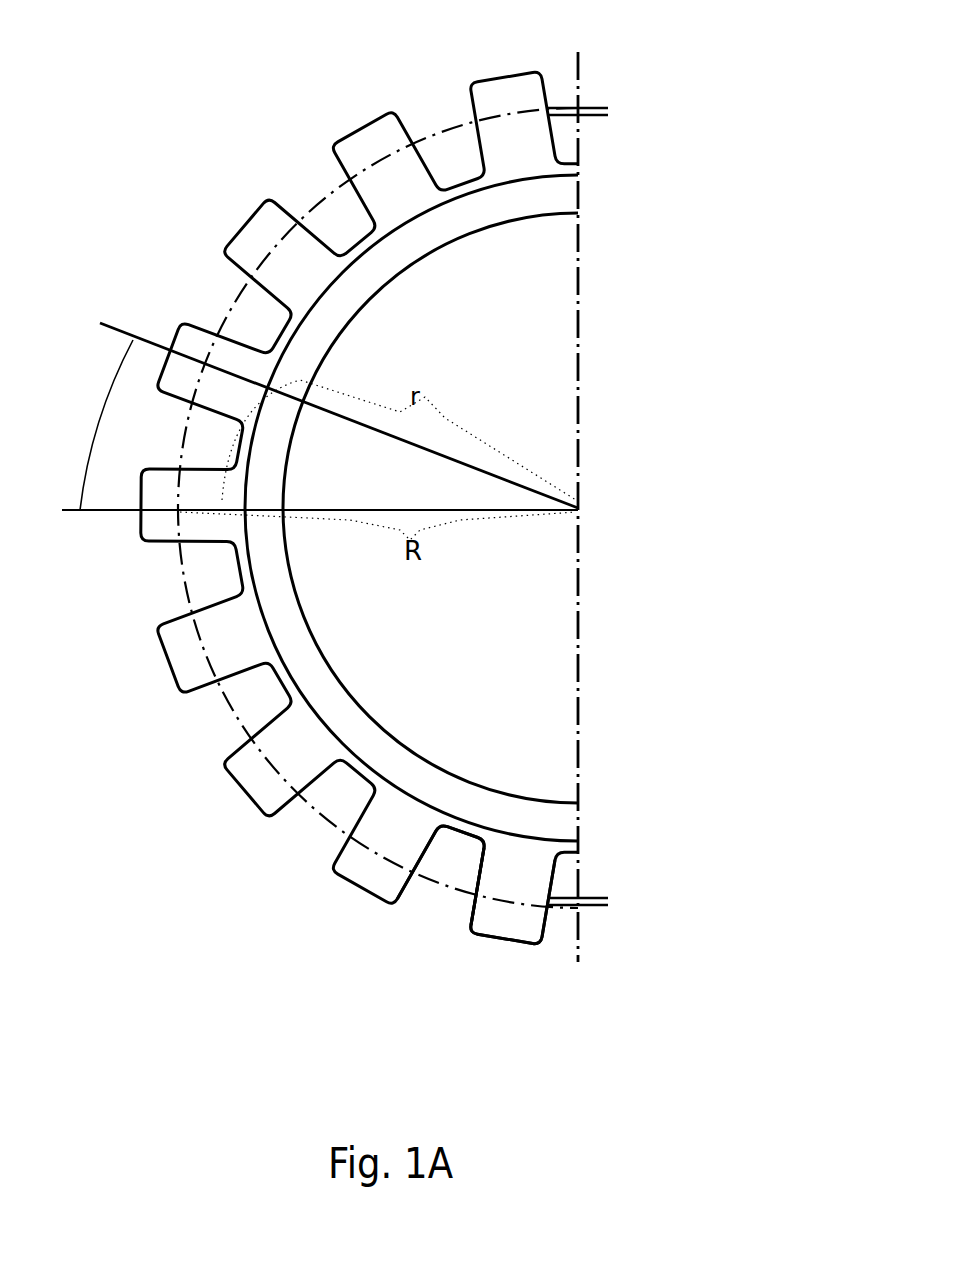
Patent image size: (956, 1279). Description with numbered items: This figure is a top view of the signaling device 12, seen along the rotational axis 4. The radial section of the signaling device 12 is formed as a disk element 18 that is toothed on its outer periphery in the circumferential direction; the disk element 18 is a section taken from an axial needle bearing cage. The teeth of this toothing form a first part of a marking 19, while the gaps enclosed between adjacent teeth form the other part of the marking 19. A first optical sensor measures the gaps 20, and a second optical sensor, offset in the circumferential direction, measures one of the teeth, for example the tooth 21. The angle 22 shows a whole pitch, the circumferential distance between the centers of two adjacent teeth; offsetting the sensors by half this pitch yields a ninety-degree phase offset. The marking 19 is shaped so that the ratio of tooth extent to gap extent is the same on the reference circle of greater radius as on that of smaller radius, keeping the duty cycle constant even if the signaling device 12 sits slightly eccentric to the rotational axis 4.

The rotational axis 4 is at (582, 504).
The signaling device 12 is at (250, 927).
The disk element 18 is at (290, 614).
The marking 19 is at (432, 922).
The gaps 20 is at (564, 62).
The tooth 21 is at (512, 928).
The angle 22 is at (85, 417).